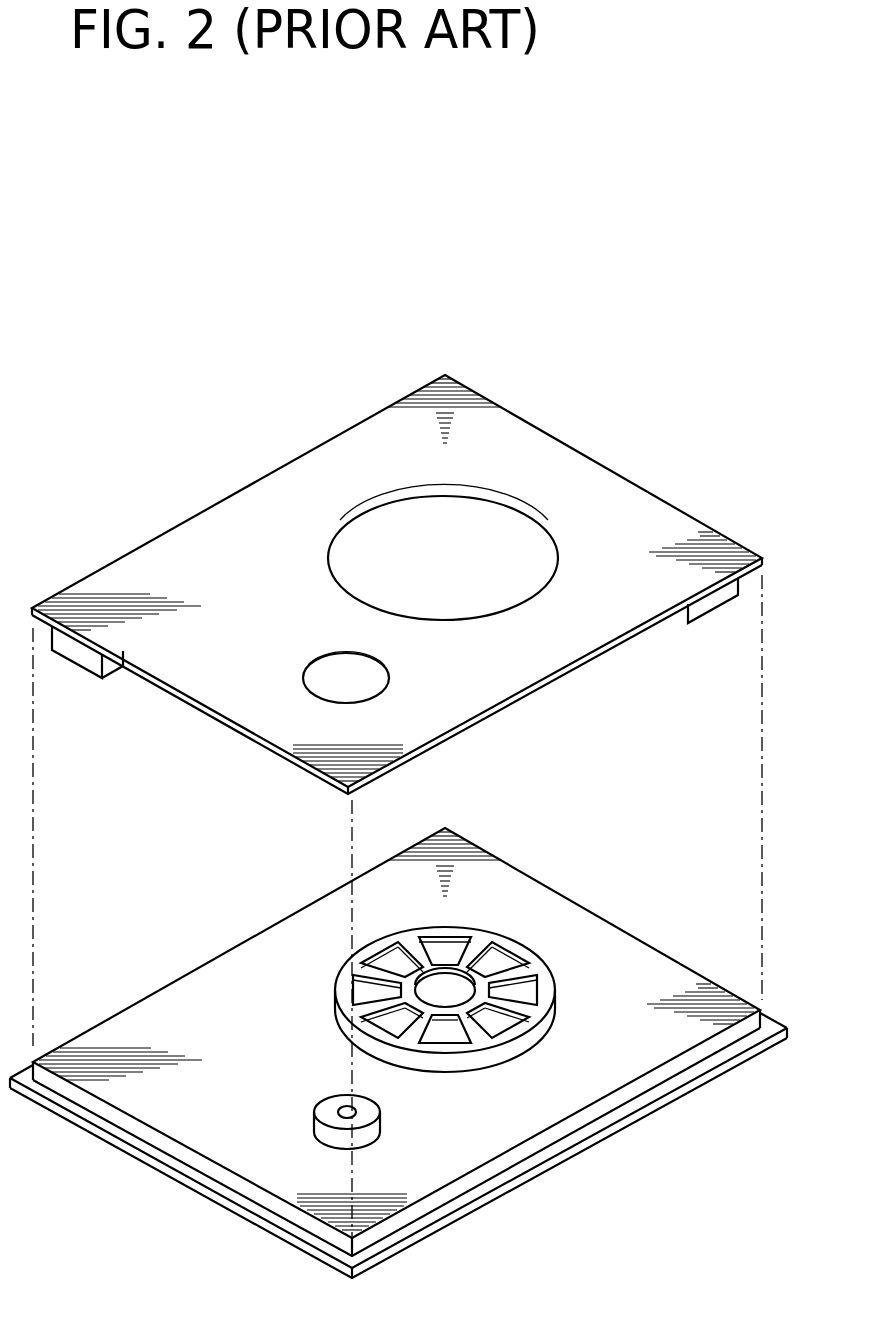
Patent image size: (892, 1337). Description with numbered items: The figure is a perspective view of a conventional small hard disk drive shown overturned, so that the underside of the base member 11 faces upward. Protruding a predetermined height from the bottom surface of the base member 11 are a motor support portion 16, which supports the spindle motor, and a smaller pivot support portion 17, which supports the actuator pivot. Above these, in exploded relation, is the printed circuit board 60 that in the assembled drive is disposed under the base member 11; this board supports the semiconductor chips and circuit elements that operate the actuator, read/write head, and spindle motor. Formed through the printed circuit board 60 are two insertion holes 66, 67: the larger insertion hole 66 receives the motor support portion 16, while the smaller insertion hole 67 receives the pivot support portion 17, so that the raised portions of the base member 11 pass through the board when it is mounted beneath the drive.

The base member 11 is at (658, 978).
The motor support portion 16 is at (537, 960).
The pivot support portion 17 is at (325, 1113).
The printed circuit board 60 is at (567, 643).
The insertion hole 66 is at (495, 540).
The insertion hole 67 is at (330, 688).